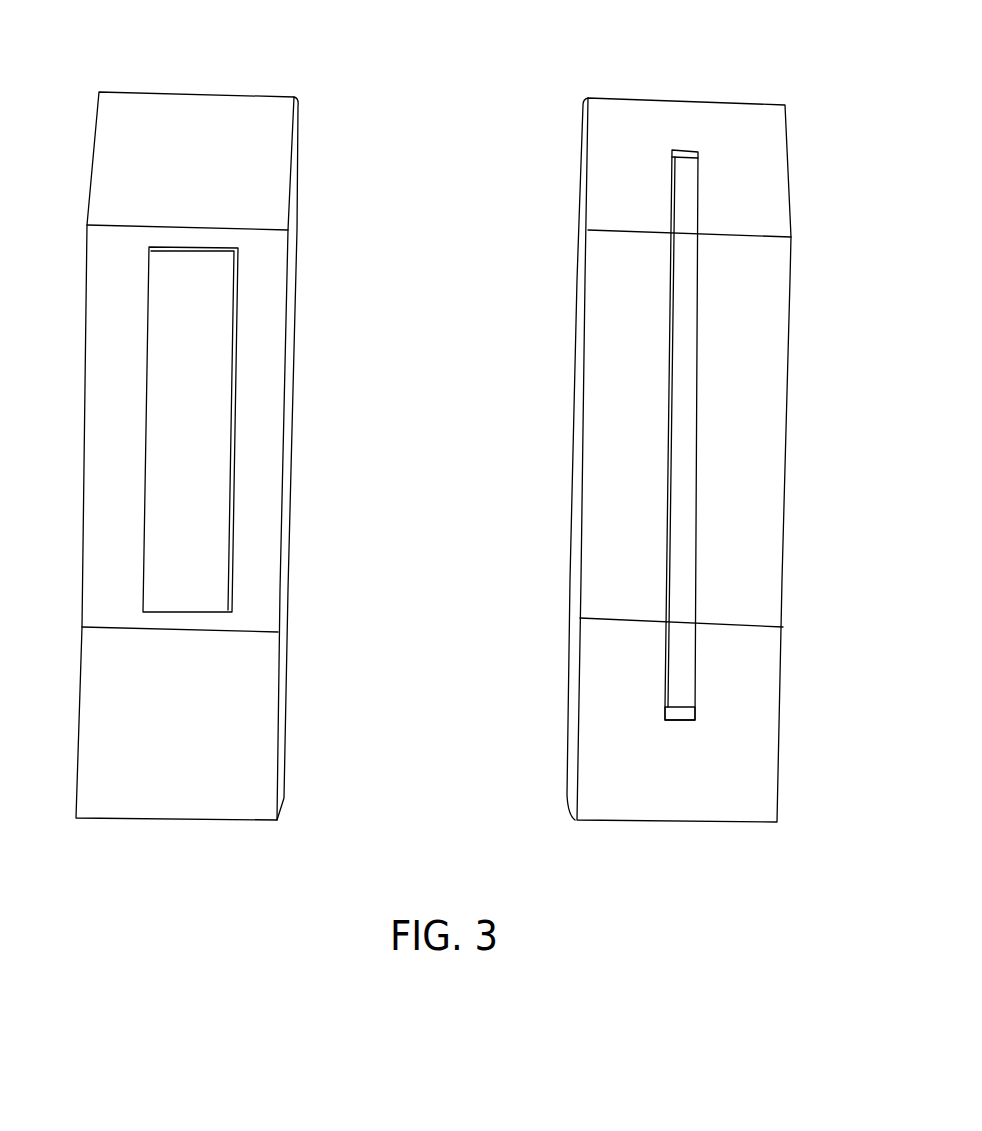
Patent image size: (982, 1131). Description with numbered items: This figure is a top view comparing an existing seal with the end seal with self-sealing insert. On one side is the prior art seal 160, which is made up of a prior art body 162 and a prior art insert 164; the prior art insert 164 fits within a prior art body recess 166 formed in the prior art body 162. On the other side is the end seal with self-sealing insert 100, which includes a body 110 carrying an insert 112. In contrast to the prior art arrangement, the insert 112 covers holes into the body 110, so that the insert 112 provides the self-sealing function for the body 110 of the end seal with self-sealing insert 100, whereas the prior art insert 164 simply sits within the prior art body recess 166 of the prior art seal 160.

The end seal with self-sealing insert 100 is at (215, 412).
The body 110 is at (268, 153).
The insert 112 is at (200, 523).
The prior art seal 160 is at (705, 412).
The prior art body 162 is at (752, 172).
The prior art insert 164 is at (680, 477).
The prior art body recess 166 is at (695, 713).